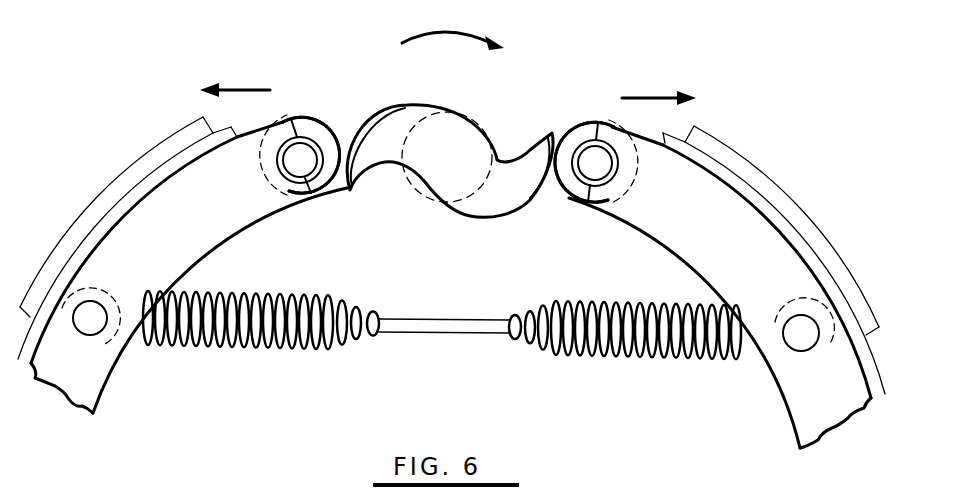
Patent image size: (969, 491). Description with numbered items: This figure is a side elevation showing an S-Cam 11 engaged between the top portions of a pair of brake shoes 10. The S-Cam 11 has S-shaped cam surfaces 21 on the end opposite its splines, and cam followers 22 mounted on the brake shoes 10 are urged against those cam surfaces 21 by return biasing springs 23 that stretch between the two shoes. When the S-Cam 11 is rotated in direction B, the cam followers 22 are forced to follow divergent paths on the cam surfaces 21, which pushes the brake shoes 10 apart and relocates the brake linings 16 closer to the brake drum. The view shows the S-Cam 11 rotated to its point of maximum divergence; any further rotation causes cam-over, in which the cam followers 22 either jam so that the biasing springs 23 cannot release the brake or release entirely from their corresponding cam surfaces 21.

The brake shoes 10 is at (130, 378).
The S-Cam 11 is at (500, 110).
The brake linings 16 is at (118, 174).
The S-shaped cam surfaces 21 is at (392, 106).
The cam followers 22 is at (305, 117).
The return biasing springs 23 is at (270, 352).
The direction of rotation B is at (437, 36).